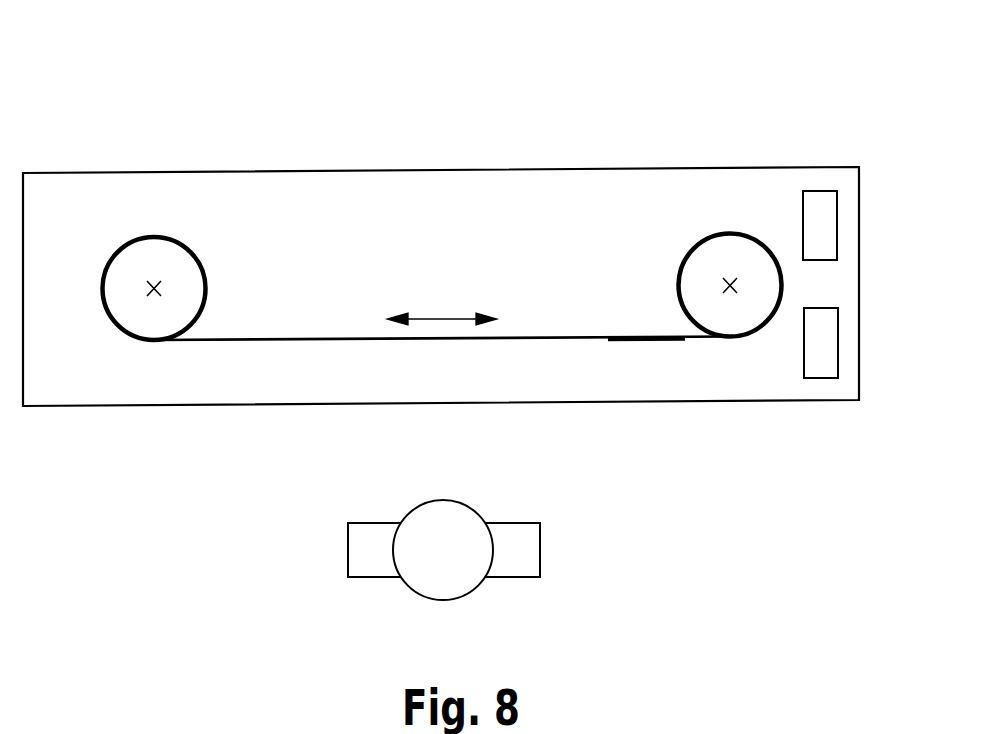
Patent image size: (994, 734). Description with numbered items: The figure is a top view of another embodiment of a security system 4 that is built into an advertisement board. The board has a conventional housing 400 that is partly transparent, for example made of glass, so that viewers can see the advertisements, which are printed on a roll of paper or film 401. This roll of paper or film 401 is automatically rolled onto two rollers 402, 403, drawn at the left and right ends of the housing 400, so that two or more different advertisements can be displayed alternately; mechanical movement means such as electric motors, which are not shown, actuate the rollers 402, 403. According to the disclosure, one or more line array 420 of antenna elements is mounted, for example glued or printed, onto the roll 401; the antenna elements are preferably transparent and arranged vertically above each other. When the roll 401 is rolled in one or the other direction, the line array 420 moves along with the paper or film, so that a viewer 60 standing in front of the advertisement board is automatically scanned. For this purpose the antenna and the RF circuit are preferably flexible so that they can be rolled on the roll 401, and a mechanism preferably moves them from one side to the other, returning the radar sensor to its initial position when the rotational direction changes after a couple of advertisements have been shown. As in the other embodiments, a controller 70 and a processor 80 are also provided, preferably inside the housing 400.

The security system 4 is at (830, 93).
The housing 400 is at (623, 168).
The roll of paper or film 401 is at (555, 341).
The roller 402 is at (154, 237).
The roller 403 is at (730, 233).
The line array of antenna elements 420 is at (648, 341).
The controller 70 is at (837, 222).
The processor 80 is at (838, 340).
The viewer 60 is at (540, 548).